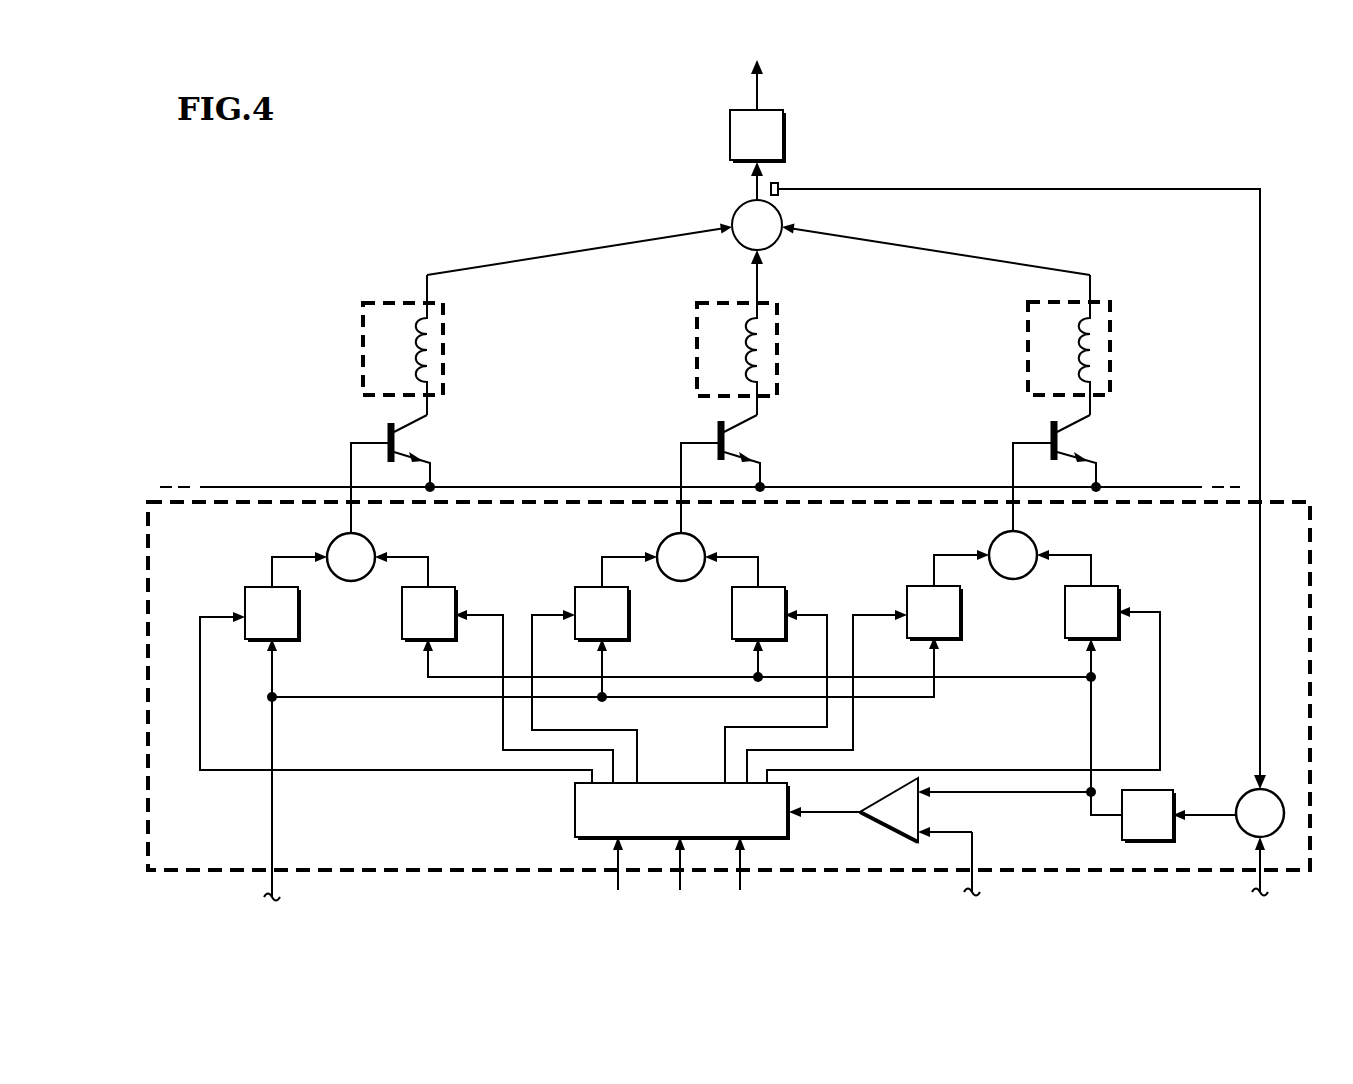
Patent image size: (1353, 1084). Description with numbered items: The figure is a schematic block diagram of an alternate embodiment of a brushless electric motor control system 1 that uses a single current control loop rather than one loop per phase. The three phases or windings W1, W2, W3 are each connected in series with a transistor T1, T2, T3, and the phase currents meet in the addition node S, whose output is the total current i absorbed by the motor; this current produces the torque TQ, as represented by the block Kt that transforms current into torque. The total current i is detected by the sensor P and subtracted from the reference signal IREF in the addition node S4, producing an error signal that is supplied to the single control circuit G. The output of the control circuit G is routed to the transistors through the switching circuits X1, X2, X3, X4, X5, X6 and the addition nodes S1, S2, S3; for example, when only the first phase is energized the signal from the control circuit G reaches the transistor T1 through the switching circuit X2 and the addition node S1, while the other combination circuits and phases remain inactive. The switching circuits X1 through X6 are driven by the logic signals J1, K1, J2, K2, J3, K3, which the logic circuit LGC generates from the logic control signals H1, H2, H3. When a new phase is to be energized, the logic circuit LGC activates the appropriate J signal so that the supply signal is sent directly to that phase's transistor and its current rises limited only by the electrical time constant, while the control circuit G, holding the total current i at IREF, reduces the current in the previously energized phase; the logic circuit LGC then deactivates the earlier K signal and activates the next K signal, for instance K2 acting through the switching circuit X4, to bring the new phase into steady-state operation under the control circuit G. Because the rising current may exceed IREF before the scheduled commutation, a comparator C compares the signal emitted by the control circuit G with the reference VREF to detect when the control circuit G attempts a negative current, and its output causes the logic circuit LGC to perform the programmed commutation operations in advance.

The torque TQ is at (757, 100).
The current-to-torque block Kt is at (771, 148).
The addition node S is at (748, 204).
The sensor P is at (779, 187).
The total current i is at (1012, 189).
The first phase winding W1 is at (403, 345).
The second phase winding W2 is at (737, 359).
The third phase winding W3 is at (1069, 345).
The first transistor T1 is at (386, 436).
The second transistor T2 is at (716, 436).
The third transistor T3 is at (1049, 436).
The control system 1 is at (1292, 500).
The first addition node S1 is at (351, 581).
The second addition node S2 is at (681, 581).
The third addition node S3 is at (1013, 579).
The fourth addition node S4 is at (1243, 793).
The first switching circuit X1 is at (285, 628).
The second switching circuit X2 is at (442, 628).
The third switching circuit X3 is at (615, 628).
The fourth switching circuit X4 is at (772, 628).
The fifth switching circuit X5 is at (947, 627).
The sixth switching circuit X6 is at (1105, 627).
The first logic signal J1 is at (213, 614).
The second logic signal J2 is at (539, 612).
The third logic signal J3 is at (865, 612).
The first logic signal K K1 is at (494, 612).
The second logic signal K K2 is at (822, 612).
The third logic signal K K3 is at (1145, 611).
The logic circuit LGC is at (681, 810).
The comparator C is at (888, 796).
The control circuit G is at (1158, 829).
The first control signal H1 is at (620, 877).
The second control signal H2 is at (681, 877).
The third control signal H3 is at (741, 877).
The reference voltage VREF is at (965, 878).
The reference signal IREF is at (1252, 880).